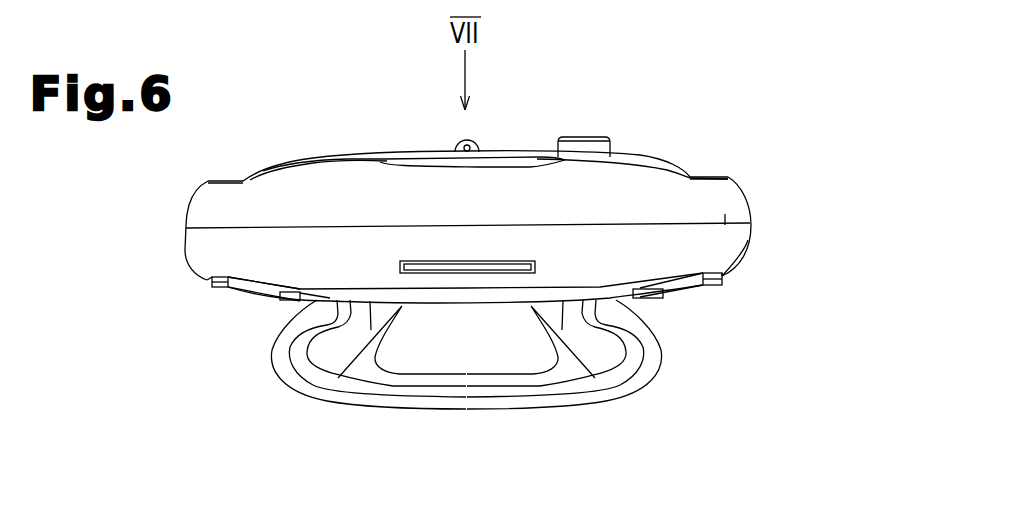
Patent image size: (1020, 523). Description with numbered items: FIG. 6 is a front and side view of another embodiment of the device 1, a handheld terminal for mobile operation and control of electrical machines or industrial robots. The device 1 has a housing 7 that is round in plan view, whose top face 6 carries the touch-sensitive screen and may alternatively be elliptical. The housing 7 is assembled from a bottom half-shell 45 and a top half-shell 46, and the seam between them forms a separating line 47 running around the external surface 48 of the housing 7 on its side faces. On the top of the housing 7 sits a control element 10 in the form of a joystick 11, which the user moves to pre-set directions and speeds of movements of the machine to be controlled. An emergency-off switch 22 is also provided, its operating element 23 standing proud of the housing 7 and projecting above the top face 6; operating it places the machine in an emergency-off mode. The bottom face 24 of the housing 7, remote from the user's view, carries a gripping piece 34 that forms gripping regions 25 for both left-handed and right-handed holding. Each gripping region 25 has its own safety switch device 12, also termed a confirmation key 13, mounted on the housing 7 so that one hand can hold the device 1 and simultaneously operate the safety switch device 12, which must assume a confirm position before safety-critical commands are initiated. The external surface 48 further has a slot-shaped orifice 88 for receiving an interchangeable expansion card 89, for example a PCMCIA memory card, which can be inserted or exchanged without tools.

The device 1 is at (707, 97).
The top face 6 is at (388, 145).
The housing 7 is at (750, 203).
The control element 10 is at (475, 130).
The joystick 11 is at (463, 147).
The safety switch device 12 is at (192, 302).
The confirmation key 13 is at (208, 292).
The emergency-off switch 22 is at (607, 137).
The operating element 23 is at (585, 140).
The bottom face 24 is at (317, 300).
The gripping region 25 is at (252, 387).
The gripping piece 34 is at (300, 376).
The bottom half-shell 45 is at (725, 240).
The top half-shell 46 is at (727, 195).
The separating line 47 is at (727, 222).
The external surface 48 is at (215, 213).
The slot-shaped orifice 88 is at (385, 265).
The expansion card 89 is at (483, 265).